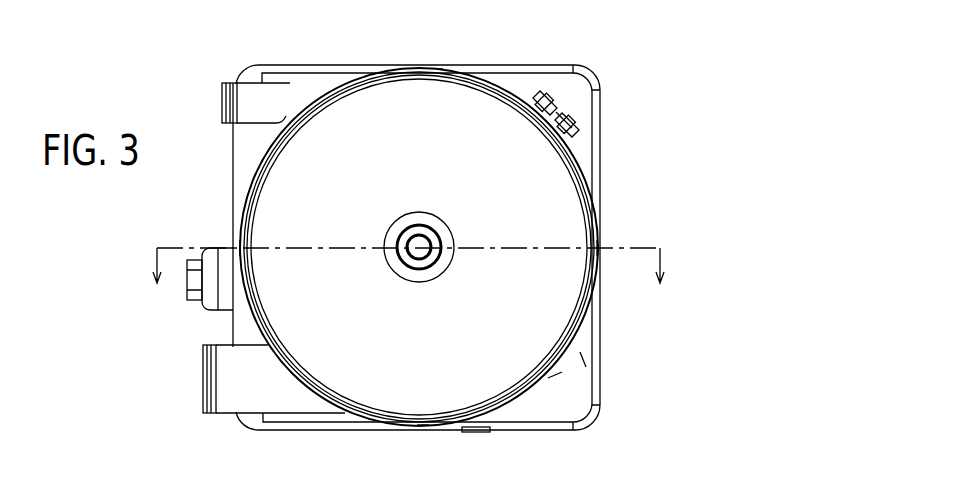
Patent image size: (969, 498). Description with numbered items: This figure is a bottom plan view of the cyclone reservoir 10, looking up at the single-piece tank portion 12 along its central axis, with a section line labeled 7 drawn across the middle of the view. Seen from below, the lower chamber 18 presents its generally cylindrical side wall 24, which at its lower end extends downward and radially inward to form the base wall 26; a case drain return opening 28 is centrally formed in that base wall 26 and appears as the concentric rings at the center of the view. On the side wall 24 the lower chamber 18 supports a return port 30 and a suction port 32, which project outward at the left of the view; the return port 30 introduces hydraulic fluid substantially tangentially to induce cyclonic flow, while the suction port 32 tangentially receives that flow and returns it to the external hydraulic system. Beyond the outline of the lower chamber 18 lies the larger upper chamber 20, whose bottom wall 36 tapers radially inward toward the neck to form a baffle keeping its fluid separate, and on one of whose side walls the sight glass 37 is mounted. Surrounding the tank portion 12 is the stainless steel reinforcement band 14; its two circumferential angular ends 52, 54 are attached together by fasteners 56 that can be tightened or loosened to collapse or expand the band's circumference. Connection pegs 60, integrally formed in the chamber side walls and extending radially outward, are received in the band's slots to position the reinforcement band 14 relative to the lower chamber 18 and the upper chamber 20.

The cyclone reservoir 10 is at (632, 48).
The tank portion 12 is at (560, 190).
The reinforcement band 14 is at (580, 160).
The lower chamber 18 is at (283, 183).
The upper chamber 20 is at (580, 375).
The side wall 24 is at (527, 392).
The base wall 26 is at (358, 171).
The case drain return opening 28 is at (419, 250).
The return port 30 is at (222, 104).
The suction port 32 is at (203, 383).
The bottom wall 36 is at (580, 403).
The sight glass 37 is at (215, 302).
The angular end 52 is at (565, 112).
The angular end 54 is at (578, 128).
The fasteners 56 is at (540, 98).
The connection pegs 60 is at (440, 68).
The section line 7- 7 is at (408, 279).